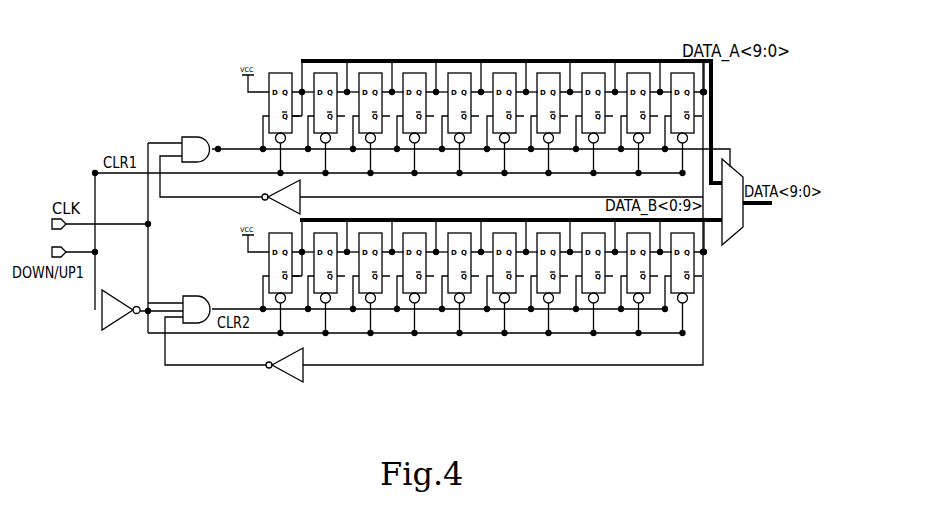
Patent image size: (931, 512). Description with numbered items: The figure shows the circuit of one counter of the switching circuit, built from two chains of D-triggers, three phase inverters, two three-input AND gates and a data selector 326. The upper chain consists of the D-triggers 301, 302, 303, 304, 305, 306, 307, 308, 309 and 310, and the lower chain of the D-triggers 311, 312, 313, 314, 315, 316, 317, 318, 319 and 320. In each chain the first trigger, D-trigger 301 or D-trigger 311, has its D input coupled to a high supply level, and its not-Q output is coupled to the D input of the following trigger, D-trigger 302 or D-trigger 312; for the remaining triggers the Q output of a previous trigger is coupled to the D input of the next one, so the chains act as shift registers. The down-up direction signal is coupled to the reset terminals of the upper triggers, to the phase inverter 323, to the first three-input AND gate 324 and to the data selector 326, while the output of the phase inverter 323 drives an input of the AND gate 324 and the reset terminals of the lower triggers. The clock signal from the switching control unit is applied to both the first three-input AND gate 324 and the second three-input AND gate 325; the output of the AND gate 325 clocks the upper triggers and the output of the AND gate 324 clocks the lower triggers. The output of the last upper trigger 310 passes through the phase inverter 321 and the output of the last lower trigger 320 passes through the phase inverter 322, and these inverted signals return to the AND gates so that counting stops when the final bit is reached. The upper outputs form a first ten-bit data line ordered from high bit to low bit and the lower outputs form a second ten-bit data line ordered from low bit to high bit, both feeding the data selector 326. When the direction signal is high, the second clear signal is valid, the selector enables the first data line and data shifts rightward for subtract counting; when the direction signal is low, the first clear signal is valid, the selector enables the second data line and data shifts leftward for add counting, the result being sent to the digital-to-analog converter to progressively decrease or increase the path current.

The D-trigger 301 is at (270, 72).
The D-trigger 302 is at (315, 72).
The D-trigger 303 is at (360, 72).
The D-trigger 304 is at (404, 72).
The D-trigger 305 is at (449, 72).
The D-trigger 306 is at (494, 72).
The D-trigger 307 is at (538, 72).
The D-trigger 308 is at (583, 72).
The D-trigger 309 is at (628, 72).
The D-trigger 310 is at (672, 72).
The D-trigger 311 is at (262, 295).
The D-trigger 312 is at (307, 295).
The D-trigger 313 is at (352, 295).
The D-trigger 314 is at (396, 295).
The D-trigger 315 is at (441, 295).
The D-trigger 316 is at (486, 295).
The D-trigger 317 is at (530, 295).
The D-trigger 318 is at (575, 295).
The D-trigger 319 is at (620, 295).
The D-trigger 320 is at (664, 295).
The phase inverter 321 is at (293, 201).
The phase inverter 322 is at (294, 383).
The phase inverter 323 is at (106, 322).
The first three-input AND gate 324 is at (193, 323).
The second three-input AND gate 325 is at (183, 137).
The data selector 326 is at (731, 245).